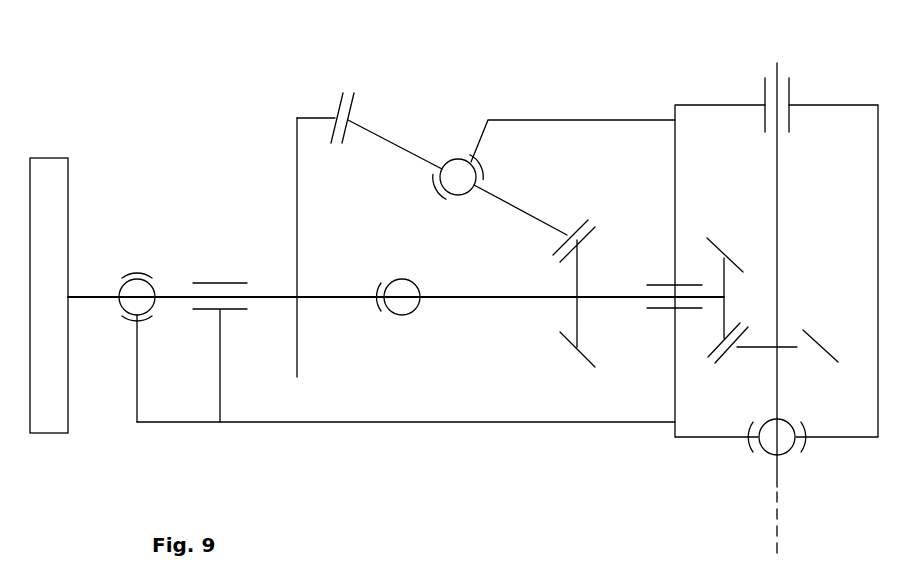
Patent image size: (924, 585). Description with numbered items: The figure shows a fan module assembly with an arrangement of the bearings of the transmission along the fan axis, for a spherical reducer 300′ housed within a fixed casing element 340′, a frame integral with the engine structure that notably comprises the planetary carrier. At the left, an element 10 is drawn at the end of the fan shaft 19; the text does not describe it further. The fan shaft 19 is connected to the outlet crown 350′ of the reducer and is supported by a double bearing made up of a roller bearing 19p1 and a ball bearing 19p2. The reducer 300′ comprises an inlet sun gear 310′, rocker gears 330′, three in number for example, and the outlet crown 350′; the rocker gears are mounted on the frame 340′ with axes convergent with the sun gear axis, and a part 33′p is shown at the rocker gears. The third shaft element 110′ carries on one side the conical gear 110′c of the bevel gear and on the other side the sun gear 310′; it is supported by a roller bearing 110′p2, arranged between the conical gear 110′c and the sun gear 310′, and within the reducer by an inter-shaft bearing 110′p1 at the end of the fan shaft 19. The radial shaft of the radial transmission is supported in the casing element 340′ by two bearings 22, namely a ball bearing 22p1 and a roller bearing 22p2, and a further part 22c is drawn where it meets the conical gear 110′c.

The engine / prime mover 10 is at (68, 195).
The fan shaft 19 is at (85, 297).
The roller bearing 19p1 is at (240, 324).
The ball bearing 19p2 is at (160, 330).
The reducer 300′ is at (260, 131).
The outlet crown 350′ is at (297, 178).
The rocker gears 330′ is at (400, 128).
The gear 33′p is at (456, 138).
The fixed casing element 340′ is at (571, 119).
The inlet sun gear 310′ is at (577, 313).
The third shaft element 110′ is at (617, 297).
The inter-shaft bearing 110′p1 is at (418, 327).
The roller bearing 110′p2 is at (663, 284).
The conical gear 110′c is at (725, 280).
The bearings 22 is at (776, 490).
The ball bearing 22p1 is at (797, 462).
The roller bearing 22p2 is at (790, 90).
The bevel gear on output shaft 22c is at (795, 348).